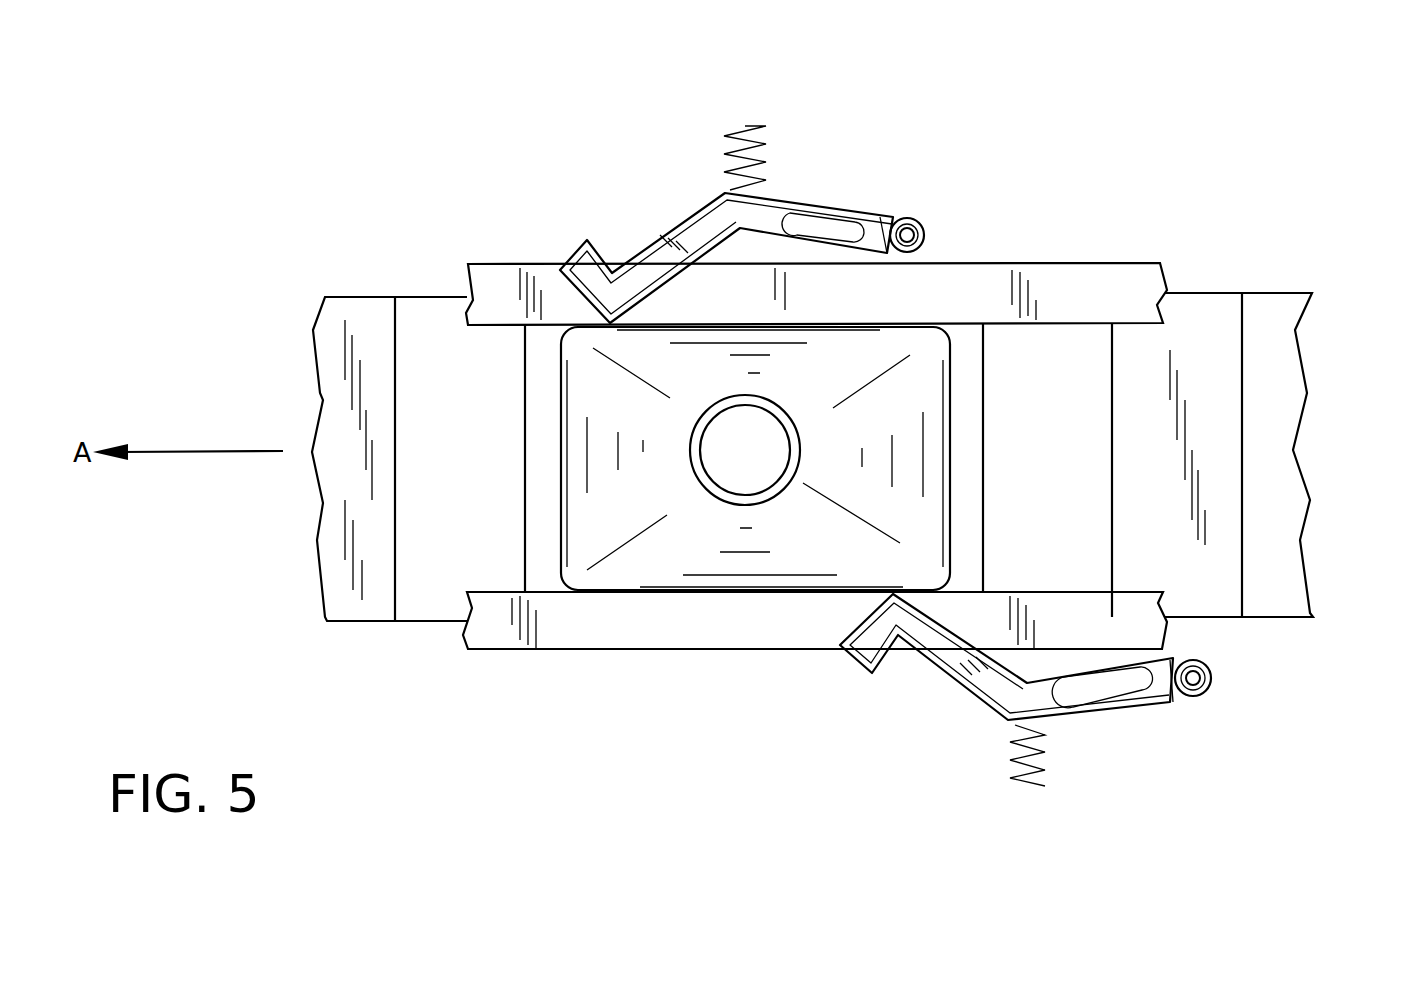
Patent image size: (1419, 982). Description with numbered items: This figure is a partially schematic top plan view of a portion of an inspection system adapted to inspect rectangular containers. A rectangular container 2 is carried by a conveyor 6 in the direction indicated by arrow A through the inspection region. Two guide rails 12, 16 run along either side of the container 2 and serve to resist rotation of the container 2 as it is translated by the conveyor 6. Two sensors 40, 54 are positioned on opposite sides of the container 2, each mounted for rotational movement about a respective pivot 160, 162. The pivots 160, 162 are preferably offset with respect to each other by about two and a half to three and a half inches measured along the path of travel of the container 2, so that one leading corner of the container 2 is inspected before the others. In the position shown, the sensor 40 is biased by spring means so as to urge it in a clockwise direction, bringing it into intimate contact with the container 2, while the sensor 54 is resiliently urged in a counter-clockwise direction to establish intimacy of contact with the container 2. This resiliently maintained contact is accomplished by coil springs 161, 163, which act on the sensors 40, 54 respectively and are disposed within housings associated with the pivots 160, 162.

The rectangular container 2 is at (577, 507).
The conveyor 6 is at (1278, 437).
The guide rail 12 is at (640, 630).
The guide rail 16 is at (1124, 278).
The sensor 40 is at (1058, 690).
The sensor 54 is at (784, 215).
The pivot 160 is at (1193, 686).
The coil spring 161 is at (1040, 782).
The pivot 162 is at (910, 218).
The coil spring 163 is at (750, 160).